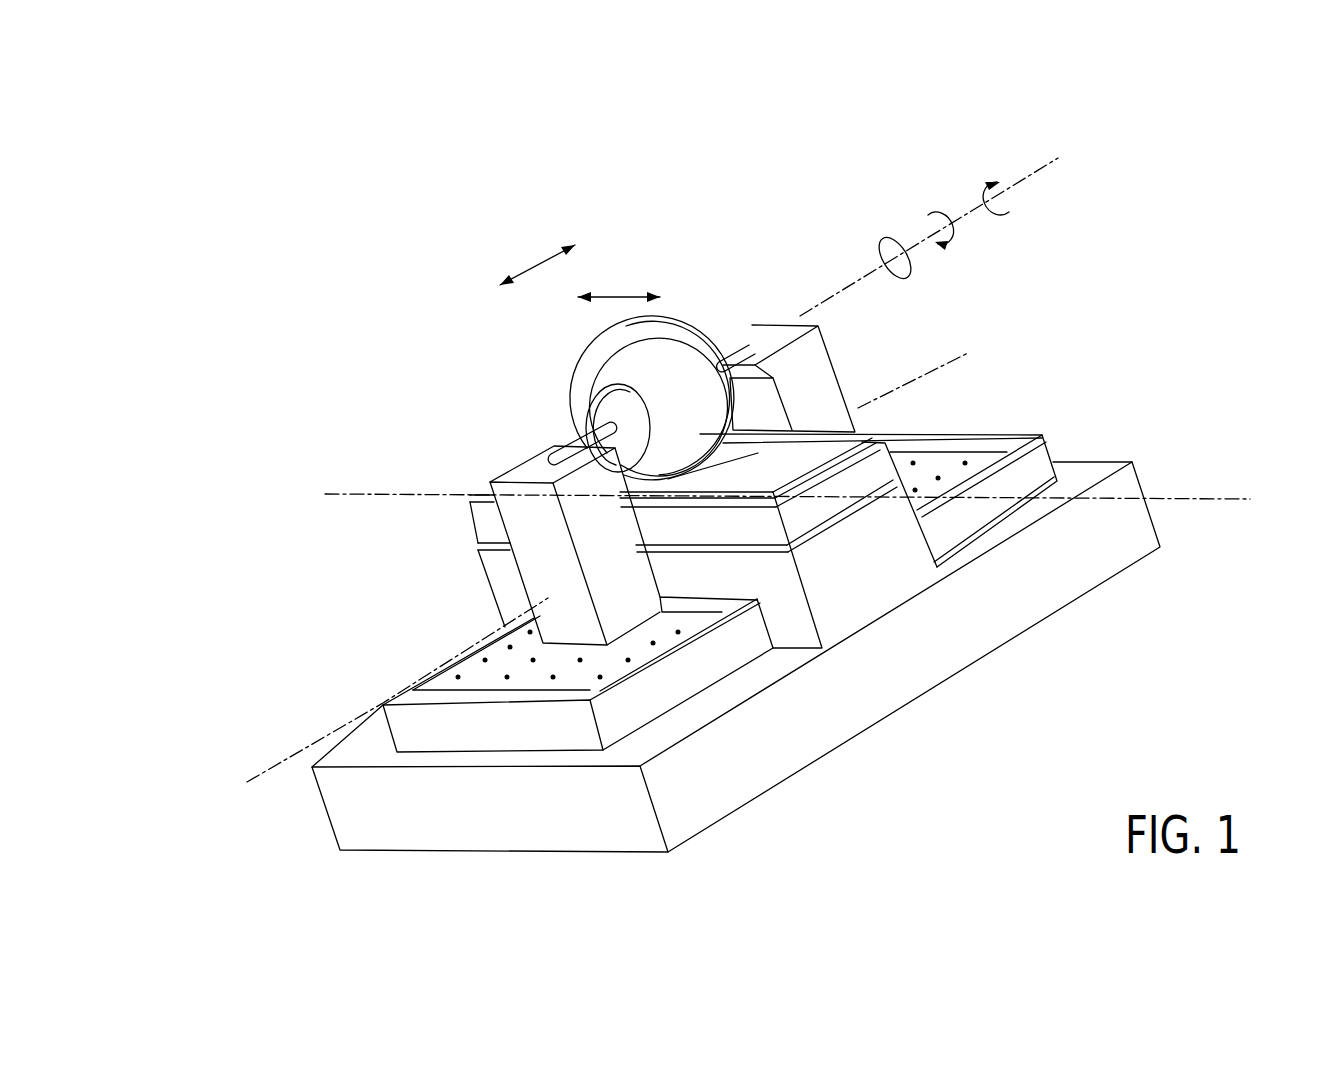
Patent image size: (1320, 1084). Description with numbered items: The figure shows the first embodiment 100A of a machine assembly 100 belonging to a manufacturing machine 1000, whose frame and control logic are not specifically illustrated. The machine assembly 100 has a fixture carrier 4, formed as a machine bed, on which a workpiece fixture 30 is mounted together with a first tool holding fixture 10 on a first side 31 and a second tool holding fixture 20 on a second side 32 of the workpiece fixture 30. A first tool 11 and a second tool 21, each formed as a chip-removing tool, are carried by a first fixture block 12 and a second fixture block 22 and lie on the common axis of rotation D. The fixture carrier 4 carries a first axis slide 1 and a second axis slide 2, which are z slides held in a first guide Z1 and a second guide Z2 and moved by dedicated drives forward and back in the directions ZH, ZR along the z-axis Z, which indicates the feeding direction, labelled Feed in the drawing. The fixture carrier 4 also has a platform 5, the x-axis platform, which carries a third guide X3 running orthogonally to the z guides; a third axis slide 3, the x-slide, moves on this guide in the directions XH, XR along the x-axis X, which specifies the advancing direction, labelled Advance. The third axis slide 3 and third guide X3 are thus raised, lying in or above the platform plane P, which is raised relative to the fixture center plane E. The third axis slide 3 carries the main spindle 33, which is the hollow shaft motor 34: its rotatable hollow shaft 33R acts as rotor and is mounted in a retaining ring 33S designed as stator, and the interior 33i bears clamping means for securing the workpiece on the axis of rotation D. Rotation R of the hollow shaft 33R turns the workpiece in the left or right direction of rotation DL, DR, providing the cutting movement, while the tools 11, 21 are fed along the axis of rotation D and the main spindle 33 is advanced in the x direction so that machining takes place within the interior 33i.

The manufacturing machine 1000 is at (196, 390).
The machine assembly 100 is at (195, 476).
The first embodiment of the machine assembly 100A is at (275, 518).
The first axis slide 1 is at (613, 712).
The second axis slide 2 is at (1022, 466).
The third axis slide 3 is at (758, 547).
The fixture carrier 4 is at (952, 652).
The platform 5 is at (890, 580).
The first tool holding fixture 10 is at (515, 521).
The first tool 11 is at (560, 455).
The first fixture block 12 is at (528, 575).
The second tool holding fixture 20 is at (848, 355).
The second tool 21 is at (756, 322).
The second fixture block 22 is at (828, 392).
The workpiece fixture 30 is at (878, 474).
The first side of the workpiece fixture 31 is at (438, 370).
The second side of the workpiece fixture 32 is at (831, 266).
The main spindle 33 is at (584, 336).
The retaining ring 33S is at (697, 330).
The hollow shaft 33R is at (572, 385).
The interior 33i is at (587, 413).
The hollow shaft motor 34 is at (765, 272).
The first guide Z1 is at (660, 690).
The second guide Z2 is at (958, 513).
The third guide X3 is at (813, 518).
The forward direction in the x direction XH is at (399, 490).
The back direction in the x direction XR is at (411, 490).
The forward direction in the z direction ZH is at (940, 368).
The back direction in the z direction ZR is at (927, 367).
The x-axis X is at (1220, 495).
The z-axis Z is at (942, 360).
The axis of rotation D is at (1036, 172).
The left direction of rotation DL is at (982, 178).
The right direction of rotation DR is at (932, 207).
The rotation R is at (886, 238).
The platform plane P is at (482, 476).
The fixture center plane E is at (300, 770).
The feed direction Z Feed is at (545, 262).
The advance direction X Advance is at (622, 296).